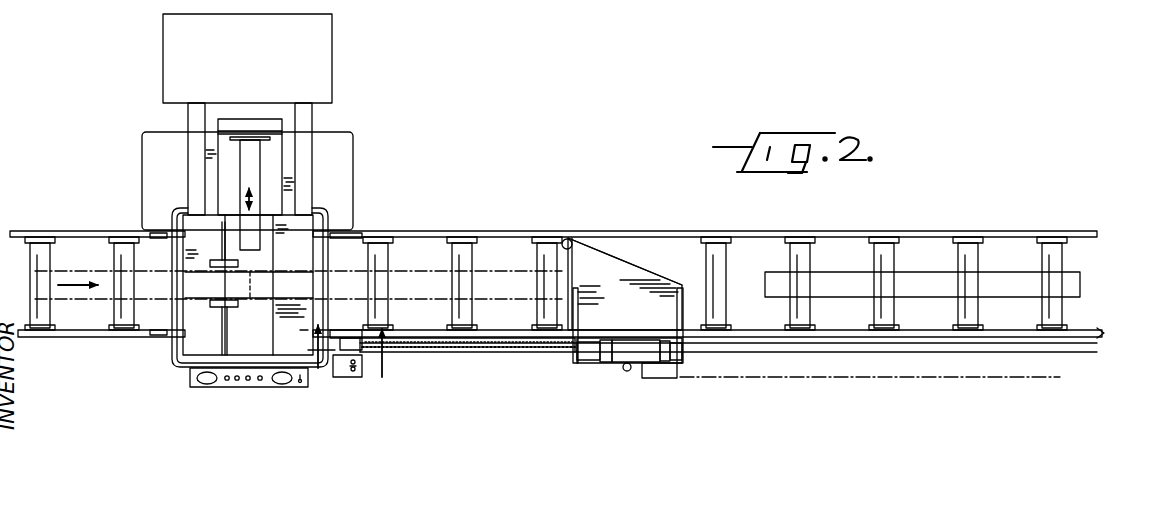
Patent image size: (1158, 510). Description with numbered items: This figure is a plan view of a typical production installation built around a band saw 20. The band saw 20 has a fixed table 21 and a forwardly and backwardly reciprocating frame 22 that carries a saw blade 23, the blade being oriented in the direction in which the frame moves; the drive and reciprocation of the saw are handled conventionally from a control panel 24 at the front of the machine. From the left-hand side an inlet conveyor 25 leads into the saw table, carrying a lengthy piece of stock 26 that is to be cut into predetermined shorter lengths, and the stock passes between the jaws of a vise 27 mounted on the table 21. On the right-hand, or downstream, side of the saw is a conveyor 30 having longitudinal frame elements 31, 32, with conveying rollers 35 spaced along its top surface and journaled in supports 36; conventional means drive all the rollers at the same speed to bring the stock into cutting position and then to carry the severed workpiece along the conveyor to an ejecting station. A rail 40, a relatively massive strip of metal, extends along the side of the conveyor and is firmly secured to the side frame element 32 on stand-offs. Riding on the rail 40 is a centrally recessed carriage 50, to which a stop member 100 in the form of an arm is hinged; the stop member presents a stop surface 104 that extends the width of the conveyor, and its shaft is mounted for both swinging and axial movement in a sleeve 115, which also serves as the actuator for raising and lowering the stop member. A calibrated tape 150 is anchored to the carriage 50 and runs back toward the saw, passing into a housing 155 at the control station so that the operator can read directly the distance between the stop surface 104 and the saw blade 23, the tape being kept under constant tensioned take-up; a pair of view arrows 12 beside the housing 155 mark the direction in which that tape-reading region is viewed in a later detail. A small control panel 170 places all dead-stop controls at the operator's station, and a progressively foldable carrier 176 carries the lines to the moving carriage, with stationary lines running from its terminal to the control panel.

The workpiece sheets 12 is at (348, 367).
The band saw 20 is at (180, 177).
The fixed table 21 is at (192, 344).
The reciprocating frame 22 is at (283, 175).
The saw blade 23 is at (255, 256).
The control panel 24 is at (222, 386).
The inlet conveyor 25 is at (80, 224).
The stock 26 is at (100, 268).
The vise 27 is at (233, 300).
The conveyor 30 is at (440, 226).
The longitudinal frame element 31 is at (405, 238).
The longitudinal frame element 32 is at (510, 333).
The conveying rollers 35 is at (537, 262).
The supports 36 is at (463, 232).
The rail 40 is at (432, 357).
The carriage 50 is at (594, 367).
The stop member 100 is at (661, 268).
The stop surface 104 is at (568, 245).
The sleeve 115 is at (622, 365).
The tape 150 is at (412, 340).
The housing 155 is at (355, 337).
The control panel 170 is at (348, 381).
The progressively foldable carrier 176 is at (760, 378).